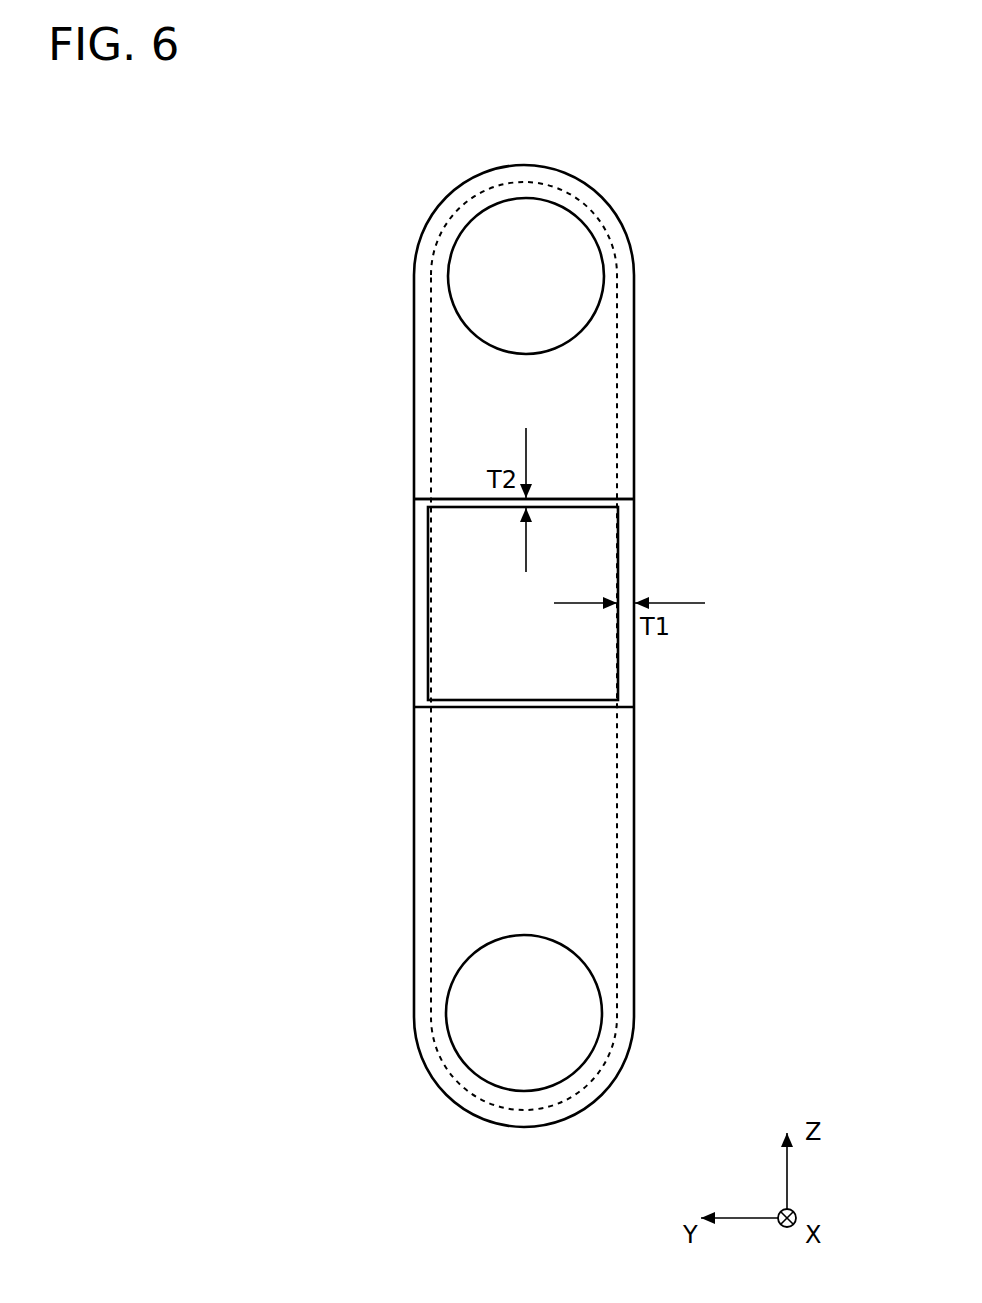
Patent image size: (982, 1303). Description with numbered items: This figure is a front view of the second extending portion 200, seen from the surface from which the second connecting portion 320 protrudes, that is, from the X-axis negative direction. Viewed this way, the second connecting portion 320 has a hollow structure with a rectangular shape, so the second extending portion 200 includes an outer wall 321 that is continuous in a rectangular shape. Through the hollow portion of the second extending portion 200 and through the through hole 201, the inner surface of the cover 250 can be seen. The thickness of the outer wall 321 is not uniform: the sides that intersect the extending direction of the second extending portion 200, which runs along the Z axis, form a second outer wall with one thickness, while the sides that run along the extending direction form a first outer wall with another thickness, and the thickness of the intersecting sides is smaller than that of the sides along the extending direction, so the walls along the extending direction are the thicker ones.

The second extending portion 200 is at (717, 296).
The through hole 201 is at (487, 348).
The cover 250 is at (480, 283).
The second connecting portion 320 is at (396, 546).
The outer wall 321 is at (597, 500).